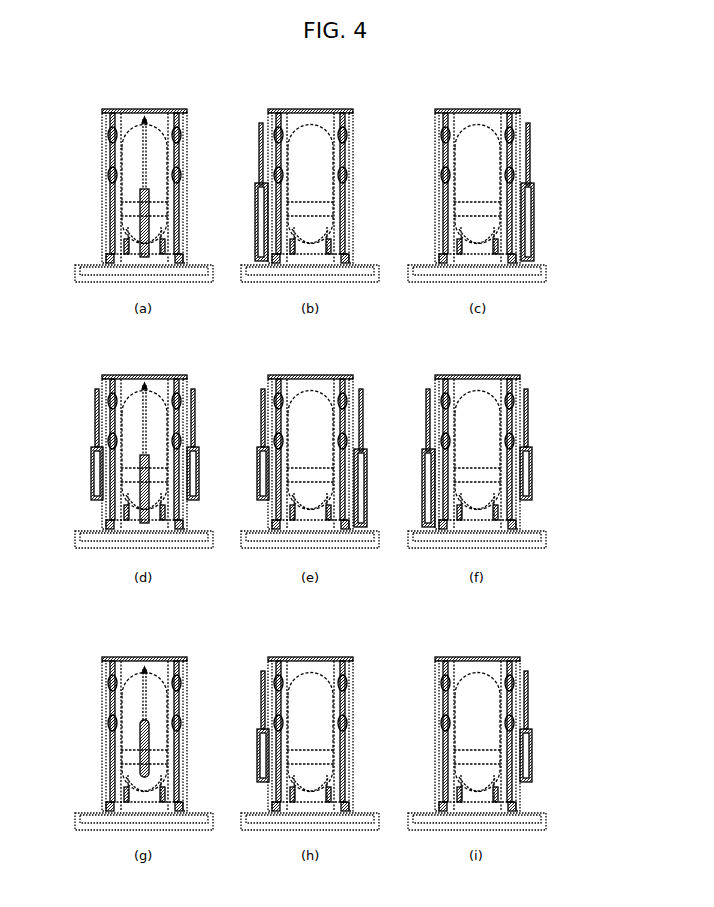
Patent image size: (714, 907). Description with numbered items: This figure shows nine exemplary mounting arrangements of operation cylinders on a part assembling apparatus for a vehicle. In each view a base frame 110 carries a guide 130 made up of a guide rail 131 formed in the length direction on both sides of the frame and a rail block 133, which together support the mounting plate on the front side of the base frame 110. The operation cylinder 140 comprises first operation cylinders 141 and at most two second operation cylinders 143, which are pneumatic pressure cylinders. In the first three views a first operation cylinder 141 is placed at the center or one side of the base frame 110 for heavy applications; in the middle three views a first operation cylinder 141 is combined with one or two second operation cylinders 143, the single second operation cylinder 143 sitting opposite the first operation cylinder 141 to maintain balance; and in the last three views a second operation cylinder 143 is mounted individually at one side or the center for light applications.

The base frame 110 is at (289, 440).
The guide 130 is at (311, 457).
The guide rail 131 is at (312, 457).
The rail block 133 is at (312, 422).
The operation cylinder 140 is at (314, 513).
The first operation cylinder 141 is at (320, 322).
The second operation cylinder 143 is at (320, 585).